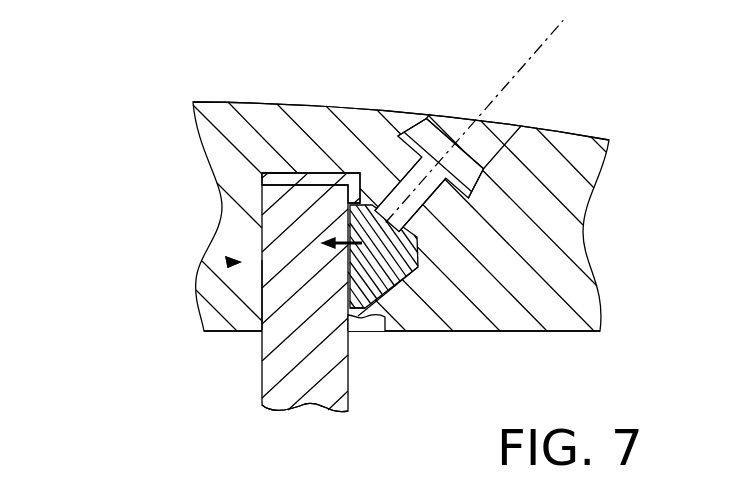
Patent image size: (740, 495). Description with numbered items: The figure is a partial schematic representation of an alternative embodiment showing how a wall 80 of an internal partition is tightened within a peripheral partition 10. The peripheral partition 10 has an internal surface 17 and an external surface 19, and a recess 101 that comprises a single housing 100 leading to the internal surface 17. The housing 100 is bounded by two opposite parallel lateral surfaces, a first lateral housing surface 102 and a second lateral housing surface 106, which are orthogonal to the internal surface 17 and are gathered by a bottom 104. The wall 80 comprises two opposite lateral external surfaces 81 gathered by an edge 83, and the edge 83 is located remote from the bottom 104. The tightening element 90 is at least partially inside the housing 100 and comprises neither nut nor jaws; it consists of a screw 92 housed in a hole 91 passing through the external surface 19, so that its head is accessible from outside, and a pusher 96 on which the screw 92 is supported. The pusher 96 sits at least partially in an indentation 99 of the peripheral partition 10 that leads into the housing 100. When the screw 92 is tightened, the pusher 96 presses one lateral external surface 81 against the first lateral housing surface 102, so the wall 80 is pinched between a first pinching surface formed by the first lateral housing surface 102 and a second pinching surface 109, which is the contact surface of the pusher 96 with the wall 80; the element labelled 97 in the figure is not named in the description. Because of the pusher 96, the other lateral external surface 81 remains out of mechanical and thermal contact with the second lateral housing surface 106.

The peripheral partition 10 is at (577, 205).
The internal surface 17 is at (555, 331).
The external surface 19 is at (591, 140).
The wall 80 is at (342, 374).
The lateral external surfaces 81 is at (261, 405).
The edge 83 is at (273, 172).
The tightening element 90 is at (424, 104).
The hole 91 is at (498, 140).
The screw 92 is at (443, 128).
The pusher 96 is at (366, 228).
The clamping wedge 97 is at (347, 229).
The indentation 99 is at (418, 267).
The housing 100 is at (234, 263).
The recess 101 is at (233, 262).
The first lateral housing surface 102 is at (262, 290).
The bottom 104 is at (315, 163).
The second lateral housing surface 106 is at (378, 317).
The second pinching surface 109 is at (348, 312).